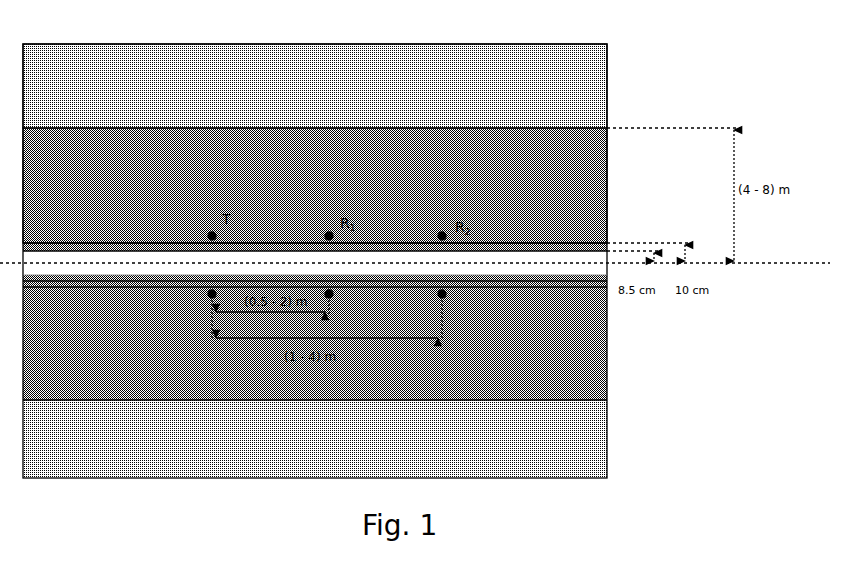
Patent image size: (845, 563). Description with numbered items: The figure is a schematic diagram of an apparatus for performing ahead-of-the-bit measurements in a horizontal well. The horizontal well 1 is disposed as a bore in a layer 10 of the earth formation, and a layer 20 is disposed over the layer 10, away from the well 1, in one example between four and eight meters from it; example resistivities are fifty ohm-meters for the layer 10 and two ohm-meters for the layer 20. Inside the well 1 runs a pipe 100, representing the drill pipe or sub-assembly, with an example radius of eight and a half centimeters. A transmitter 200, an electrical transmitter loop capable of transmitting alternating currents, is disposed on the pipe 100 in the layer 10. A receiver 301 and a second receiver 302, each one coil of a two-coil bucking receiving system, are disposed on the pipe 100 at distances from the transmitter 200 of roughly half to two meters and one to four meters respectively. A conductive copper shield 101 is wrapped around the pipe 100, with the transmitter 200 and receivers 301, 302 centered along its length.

The horizontal well 1 is at (570, 288).
The layer 10 is at (551, 168).
The layer 20 is at (551, 106).
The pipe 100 is at (98, 276).
The conductive copper shield 101 is at (151, 282).
The transmitter 200 is at (210, 234).
The receiver 301 is at (327, 234).
The second receiver 302 is at (440, 234).